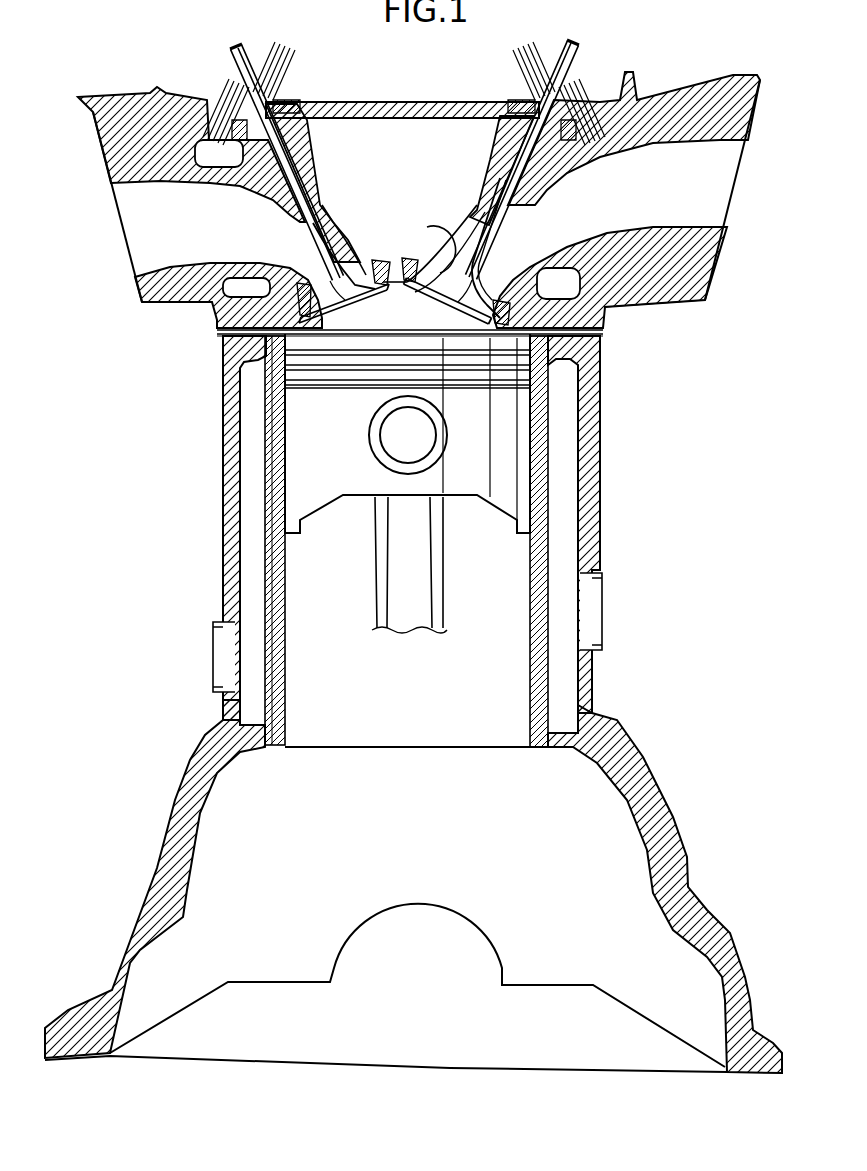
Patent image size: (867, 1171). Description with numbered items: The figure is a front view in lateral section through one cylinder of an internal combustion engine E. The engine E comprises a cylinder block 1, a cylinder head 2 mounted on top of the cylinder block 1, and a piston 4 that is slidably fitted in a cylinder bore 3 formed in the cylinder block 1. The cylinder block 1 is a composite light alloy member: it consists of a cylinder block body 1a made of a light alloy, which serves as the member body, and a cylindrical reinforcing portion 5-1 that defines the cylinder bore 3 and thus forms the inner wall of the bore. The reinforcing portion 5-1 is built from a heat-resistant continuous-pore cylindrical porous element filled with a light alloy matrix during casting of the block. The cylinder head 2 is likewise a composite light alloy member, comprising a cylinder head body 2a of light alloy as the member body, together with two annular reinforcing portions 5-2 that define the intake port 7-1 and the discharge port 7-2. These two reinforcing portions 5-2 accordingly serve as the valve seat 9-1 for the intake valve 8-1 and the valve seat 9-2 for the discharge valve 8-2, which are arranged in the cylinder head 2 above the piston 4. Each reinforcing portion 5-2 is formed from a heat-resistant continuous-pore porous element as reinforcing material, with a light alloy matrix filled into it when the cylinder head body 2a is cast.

The cylinder block 1 is at (593, 527).
The cylinder block body 1a is at (585, 459).
The cylinder head 2 is at (712, 259).
The cylinder head body 2a is at (668, 290).
The cylinder bore 3 is at (287, 557).
The piston 4 is at (478, 487).
The cylindrical reinforcing portion 5-1 is at (280, 648).
The annular reinforcing portion 5-2 is at (543, 287).
The intake port 7-1 is at (440, 236).
The discharge port 7-2 is at (366, 241).
The intake valve 8-1 is at (497, 220).
The discharge valve 8-2 is at (314, 234).
The valve seat for intake valve 9-1 is at (500, 296).
The valve seat for discharge valve 9-2 is at (394, 250).
The internal combustion engine E is at (610, 372).